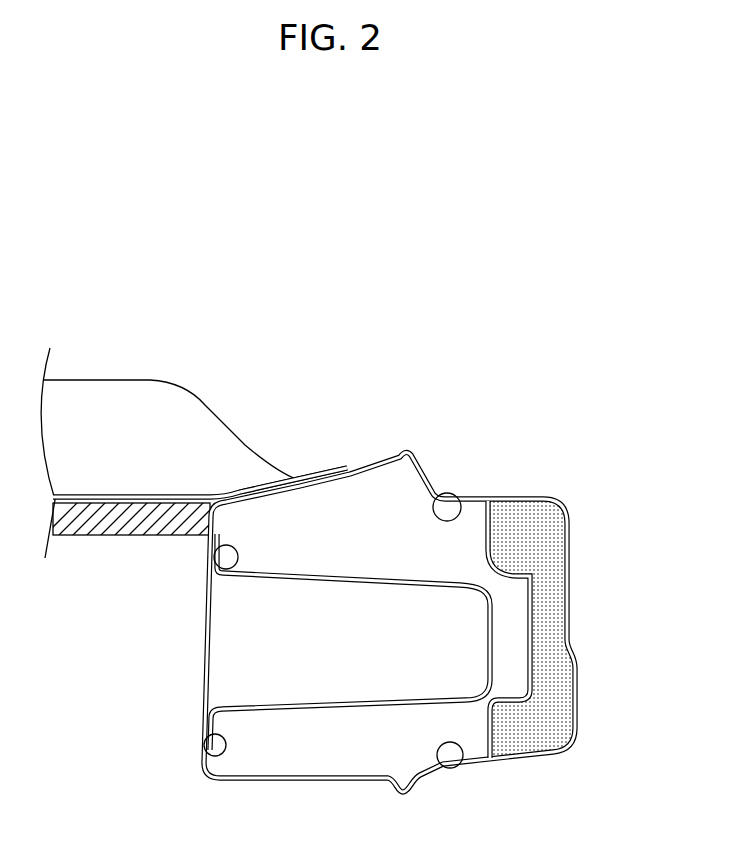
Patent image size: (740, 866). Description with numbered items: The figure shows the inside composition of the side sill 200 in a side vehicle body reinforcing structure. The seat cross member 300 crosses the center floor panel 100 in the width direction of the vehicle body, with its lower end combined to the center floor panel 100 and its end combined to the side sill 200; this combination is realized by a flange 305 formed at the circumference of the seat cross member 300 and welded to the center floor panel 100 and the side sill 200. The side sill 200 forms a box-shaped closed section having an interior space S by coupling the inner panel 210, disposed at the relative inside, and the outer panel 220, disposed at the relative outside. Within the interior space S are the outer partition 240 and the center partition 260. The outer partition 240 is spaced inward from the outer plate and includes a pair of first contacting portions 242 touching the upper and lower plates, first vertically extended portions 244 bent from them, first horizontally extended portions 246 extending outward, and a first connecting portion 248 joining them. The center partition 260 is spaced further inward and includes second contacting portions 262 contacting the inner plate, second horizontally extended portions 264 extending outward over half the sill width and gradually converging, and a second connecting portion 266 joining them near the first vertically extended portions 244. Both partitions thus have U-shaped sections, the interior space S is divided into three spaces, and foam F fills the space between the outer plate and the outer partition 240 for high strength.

The center floor panel 100 is at (85, 522).
The side sill 200 is at (582, 486).
The inner panel 210 is at (370, 470).
The outer panel 220 is at (503, 499).
The outer partition 240 is at (546, 633).
The first contacting portion 242 is at (433, 497).
The first vertically extended portion 244 is at (497, 537).
The first horizontally extended portion 246 is at (517, 573).
The first connecting portion 248 is at (533, 672).
The center partition 260 is at (392, 716).
The second contacting portion 262 is at (220, 576).
The second horizontally extended portion 264 is at (317, 573).
The second connecting portion 266 is at (490, 652).
The seat cross member 300 is at (128, 397).
The flange 305 is at (333, 470).
The foam F is at (547, 600).
The interior space S is at (372, 643).